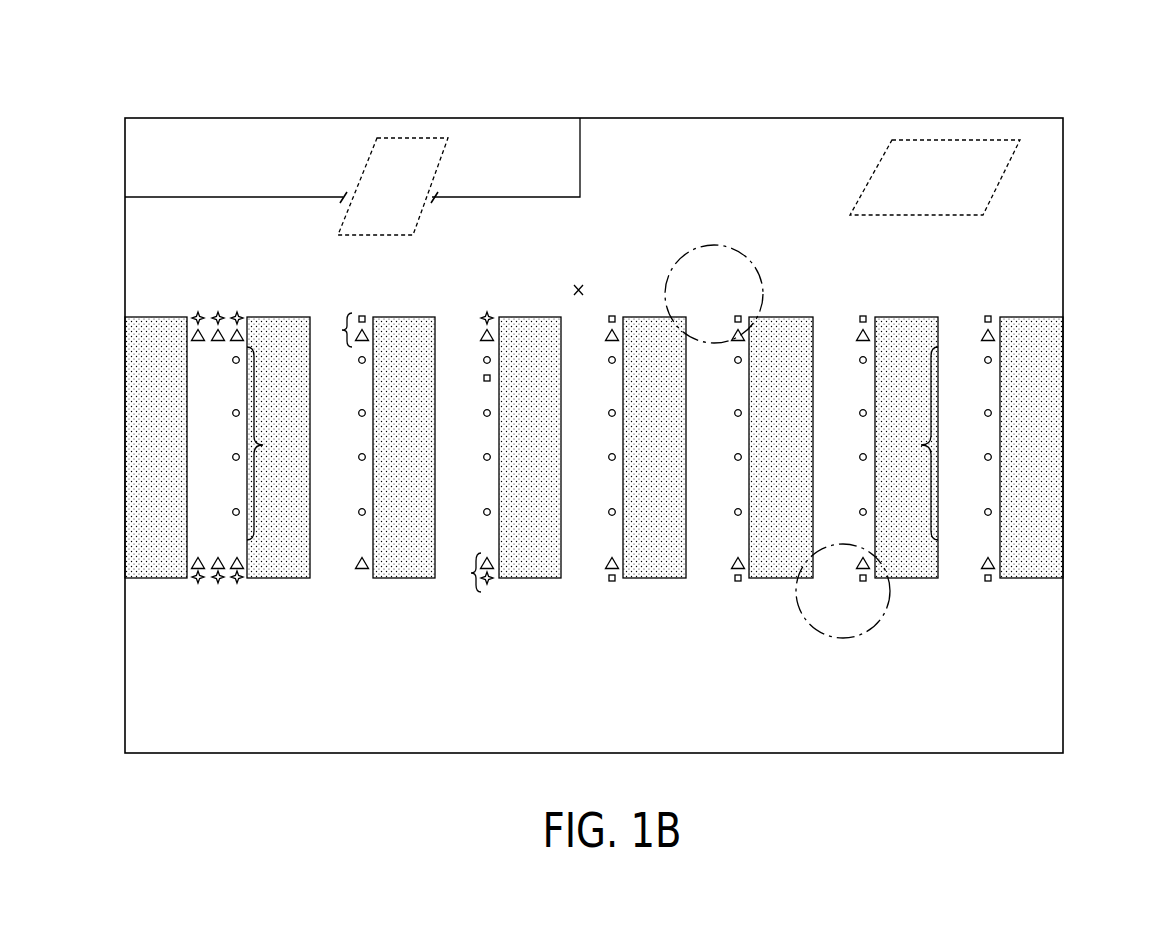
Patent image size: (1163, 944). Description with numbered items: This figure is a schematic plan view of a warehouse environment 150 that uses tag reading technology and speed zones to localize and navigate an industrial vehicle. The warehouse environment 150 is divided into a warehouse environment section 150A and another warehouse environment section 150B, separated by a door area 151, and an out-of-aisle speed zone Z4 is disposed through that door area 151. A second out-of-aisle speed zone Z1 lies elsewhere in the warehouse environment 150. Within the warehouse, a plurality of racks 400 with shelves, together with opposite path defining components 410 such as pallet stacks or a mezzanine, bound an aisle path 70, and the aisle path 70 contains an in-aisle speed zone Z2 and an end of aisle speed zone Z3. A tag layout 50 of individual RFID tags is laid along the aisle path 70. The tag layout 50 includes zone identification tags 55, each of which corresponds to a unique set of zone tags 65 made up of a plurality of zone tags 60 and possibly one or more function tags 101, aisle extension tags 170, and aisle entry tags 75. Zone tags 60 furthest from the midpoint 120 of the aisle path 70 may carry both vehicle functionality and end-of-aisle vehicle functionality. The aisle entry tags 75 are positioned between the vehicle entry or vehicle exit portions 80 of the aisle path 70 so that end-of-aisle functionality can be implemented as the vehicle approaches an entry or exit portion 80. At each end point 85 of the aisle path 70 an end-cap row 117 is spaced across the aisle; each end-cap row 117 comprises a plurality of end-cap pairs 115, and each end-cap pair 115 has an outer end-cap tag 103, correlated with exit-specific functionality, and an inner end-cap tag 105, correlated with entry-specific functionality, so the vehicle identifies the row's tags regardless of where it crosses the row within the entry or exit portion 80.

The tag layout 50 is at (1102, 117).
The warehouse environment 150 is at (1063, 200).
The warehouse environment section 150A is at (710, 162).
The warehouse environment section 150B is at (168, 162).
The door area 151 is at (338, 162).
The out-of-aisle speed zone Z1 is at (952, 218).
The in-aisle speed zone Z2 is at (845, 310).
The end of aisle speed zone Z3 is at (893, 608).
The out-of-aisle speed zone Z4 is at (447, 168).
The end-cap row 117 is at (220, 288).
The function tag 101 is at (364, 315).
The outer end-cap tag 103 is at (486, 585).
The inner end-cap tag 105 is at (493, 567).
The zone identification tag 55 is at (355, 562).
The zone tag 60 is at (359, 461).
The unique set of zone tags 65 is at (592, 443).
The aisle path 70 is at (581, 577).
The aisle entry tag 75 is at (482, 381).
The vehicle entry or vehicle exit portion 80 is at (686, 256).
The end point 85 is at (581, 340).
The end-cap pair 115 is at (397, 452).
The midpoint 120 is at (202, 429).
The aisle extension tag 170 is at (580, 290).
The rack 400 is at (660, 592).
The component 410 is at (1048, 527).